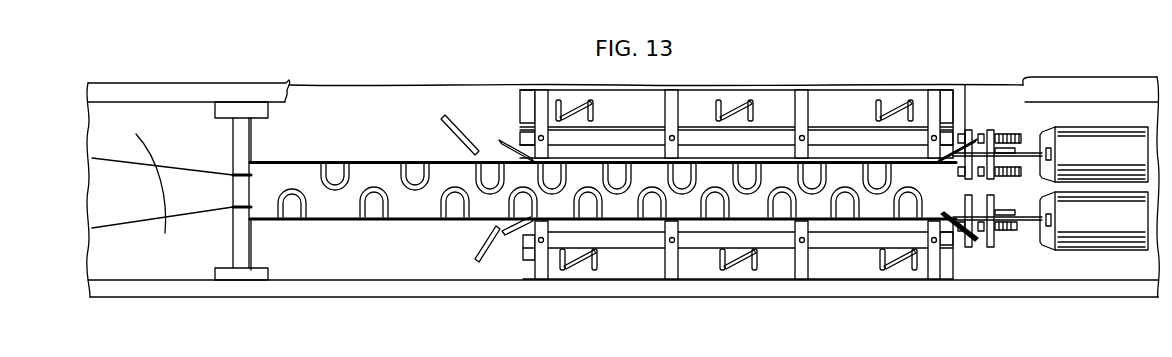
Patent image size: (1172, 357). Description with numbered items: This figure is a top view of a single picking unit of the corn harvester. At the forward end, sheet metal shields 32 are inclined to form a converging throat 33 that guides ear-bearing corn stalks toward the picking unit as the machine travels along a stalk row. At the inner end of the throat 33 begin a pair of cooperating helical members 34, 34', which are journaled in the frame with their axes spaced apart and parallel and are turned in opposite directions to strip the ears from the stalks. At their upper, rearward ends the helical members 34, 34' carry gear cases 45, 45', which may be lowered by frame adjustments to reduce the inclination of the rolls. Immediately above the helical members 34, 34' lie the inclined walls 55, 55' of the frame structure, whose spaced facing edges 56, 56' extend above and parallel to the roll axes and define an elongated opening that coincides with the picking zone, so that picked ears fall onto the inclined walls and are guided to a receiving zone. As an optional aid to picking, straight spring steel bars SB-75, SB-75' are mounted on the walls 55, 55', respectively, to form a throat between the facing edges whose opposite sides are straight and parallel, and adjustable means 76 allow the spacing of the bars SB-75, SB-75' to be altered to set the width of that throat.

The inclined shield 32 is at (158, 138).
The converging throat 33 is at (125, 164).
The helical member 34 is at (582, 200).
The helical member 34' is at (587, 180).
The gear case 45 is at (1094, 221).
The gear case 45' is at (1094, 154).
The inclined wall 55 is at (465, 74).
The inclined wall 55' is at (448, 299).
The wall edge 56 is at (487, 132).
The wall edge 56' is at (485, 240).
The adjustable means 76 is at (573, 96).
The spring steel bar SB-75 is at (725, 128).
The spring steel bar SB-75' is at (725, 246).